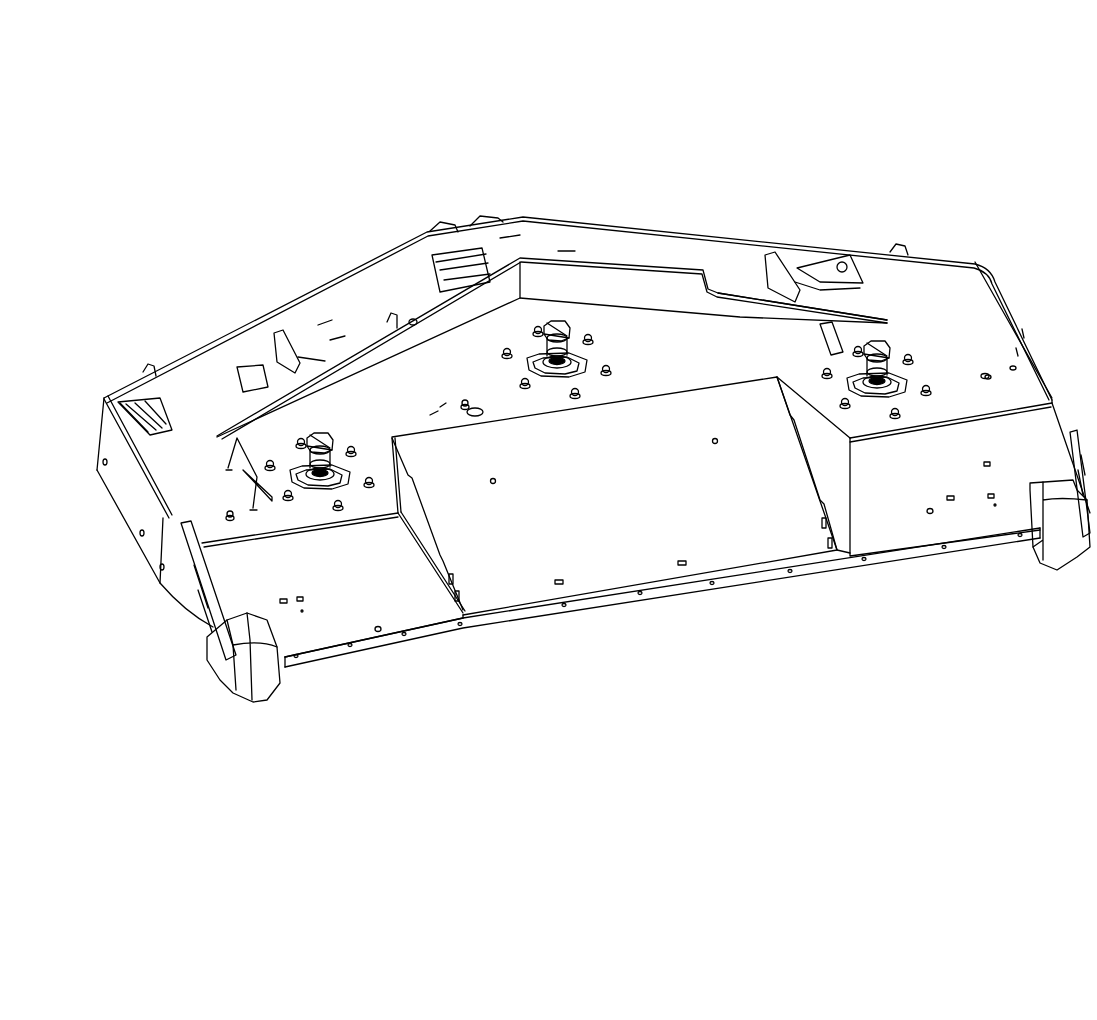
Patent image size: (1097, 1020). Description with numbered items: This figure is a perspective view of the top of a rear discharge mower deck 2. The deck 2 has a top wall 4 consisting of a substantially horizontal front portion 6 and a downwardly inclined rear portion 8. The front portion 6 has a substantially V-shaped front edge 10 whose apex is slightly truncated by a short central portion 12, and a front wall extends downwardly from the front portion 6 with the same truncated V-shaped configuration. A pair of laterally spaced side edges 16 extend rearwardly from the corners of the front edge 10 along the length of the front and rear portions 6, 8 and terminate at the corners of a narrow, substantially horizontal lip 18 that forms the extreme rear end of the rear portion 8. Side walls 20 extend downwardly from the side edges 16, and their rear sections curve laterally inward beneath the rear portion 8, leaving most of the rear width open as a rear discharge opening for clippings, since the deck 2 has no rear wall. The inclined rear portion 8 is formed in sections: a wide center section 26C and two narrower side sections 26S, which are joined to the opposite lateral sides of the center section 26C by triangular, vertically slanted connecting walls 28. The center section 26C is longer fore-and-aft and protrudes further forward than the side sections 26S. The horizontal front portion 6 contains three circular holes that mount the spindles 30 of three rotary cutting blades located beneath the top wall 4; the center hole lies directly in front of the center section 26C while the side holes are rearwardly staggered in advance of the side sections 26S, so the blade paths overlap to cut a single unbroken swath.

The deck 2 is at (644, 211).
The top wall 4 is at (771, 231).
The front portion 6 is at (888, 300).
The rear portion 8 is at (775, 535).
The front edge 10 is at (656, 231).
The central portion 12 is at (452, 226).
The side edges 16 is at (152, 478).
The lip 18 is at (388, 633).
The side walls 20 is at (127, 506).
The center section 26C is at (645, 514).
The side sections 26S is at (345, 585).
The connecting walls 28 is at (416, 509).
The spindles 30 is at (560, 325).